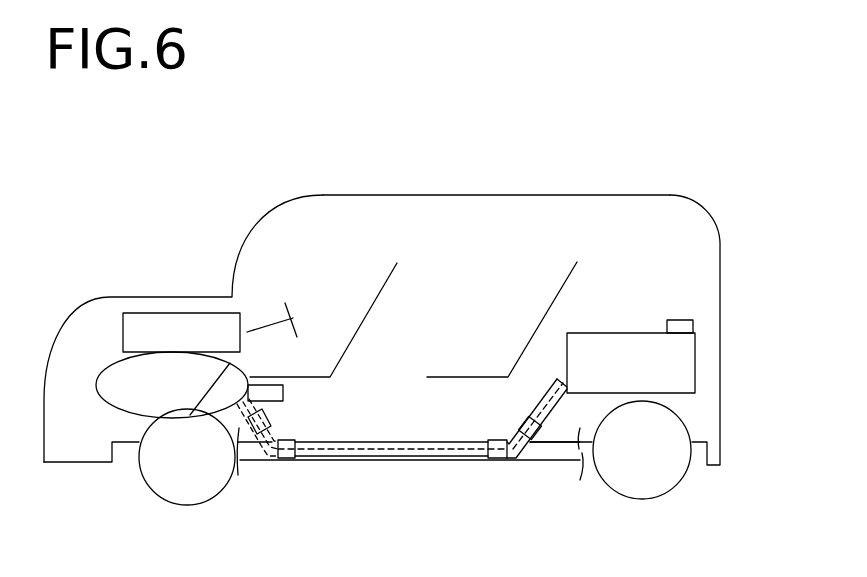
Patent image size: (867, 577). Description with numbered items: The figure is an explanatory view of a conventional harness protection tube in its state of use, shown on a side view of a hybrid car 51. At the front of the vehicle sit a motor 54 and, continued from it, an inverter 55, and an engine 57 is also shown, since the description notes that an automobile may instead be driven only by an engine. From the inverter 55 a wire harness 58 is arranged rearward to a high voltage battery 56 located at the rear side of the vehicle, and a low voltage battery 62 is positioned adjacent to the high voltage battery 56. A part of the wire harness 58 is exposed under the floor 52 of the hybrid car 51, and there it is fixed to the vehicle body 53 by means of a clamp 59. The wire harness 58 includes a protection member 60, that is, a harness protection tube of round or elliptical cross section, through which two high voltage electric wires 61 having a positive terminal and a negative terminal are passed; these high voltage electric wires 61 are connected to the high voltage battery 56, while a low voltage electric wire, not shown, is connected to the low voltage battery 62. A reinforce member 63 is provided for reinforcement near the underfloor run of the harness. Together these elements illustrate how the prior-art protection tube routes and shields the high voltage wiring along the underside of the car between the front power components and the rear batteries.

The hybrid car 51 is at (683, 157).
The floor 52 is at (545, 443).
The vehicle body 53 is at (559, 194).
The motor 54 is at (112, 385).
The inverter 55 is at (212, 403).
The high voltage battery 56 is at (695, 355).
The engine 57 is at (173, 313).
The wire harness 58 is at (375, 456).
The clamp 59 is at (500, 460).
The protection member 60 is at (347, 457).
The high voltage electric wires 61 is at (410, 448).
The low voltage battery 62 is at (680, 320).
The reinforce member 63 is at (565, 452).